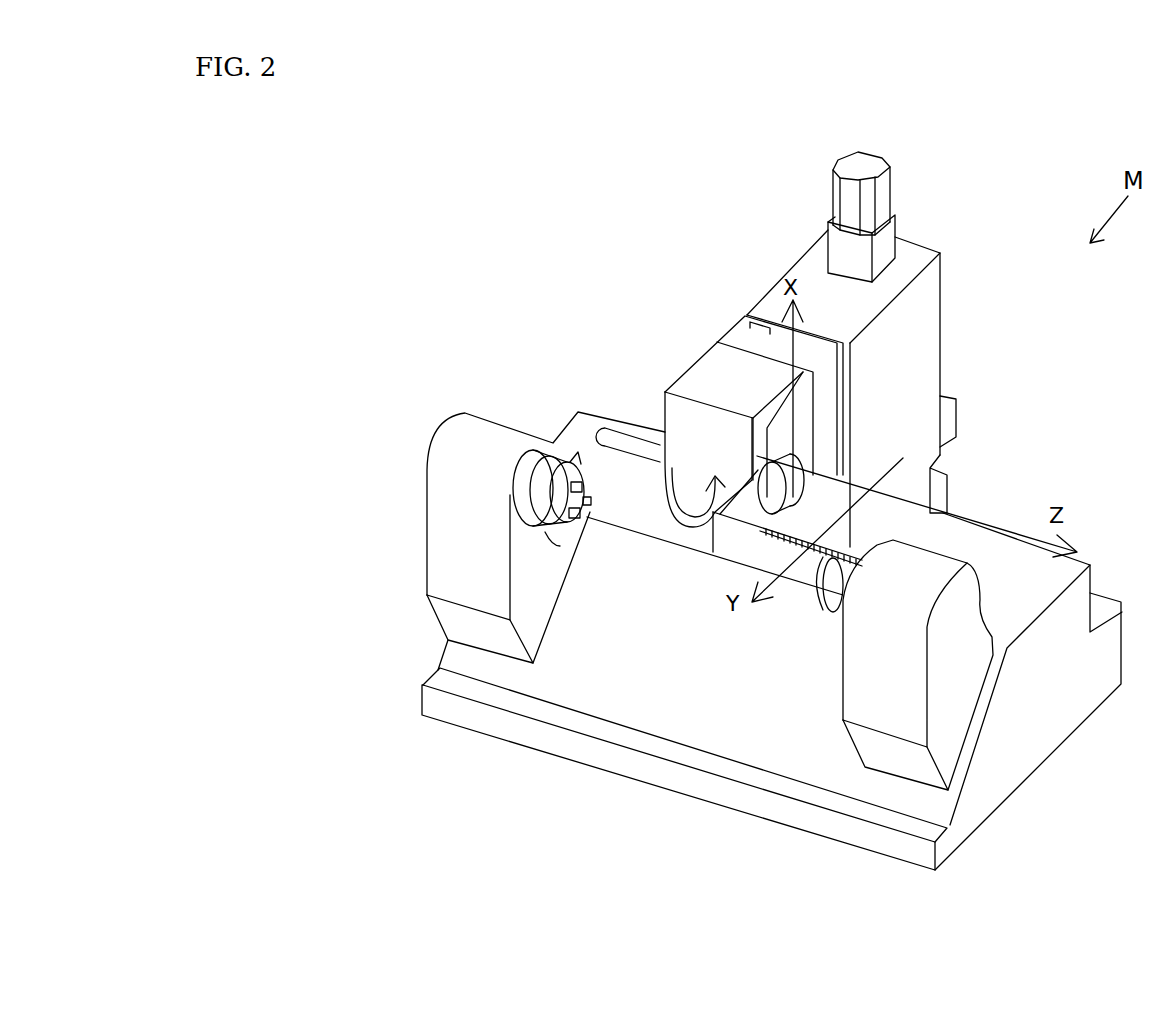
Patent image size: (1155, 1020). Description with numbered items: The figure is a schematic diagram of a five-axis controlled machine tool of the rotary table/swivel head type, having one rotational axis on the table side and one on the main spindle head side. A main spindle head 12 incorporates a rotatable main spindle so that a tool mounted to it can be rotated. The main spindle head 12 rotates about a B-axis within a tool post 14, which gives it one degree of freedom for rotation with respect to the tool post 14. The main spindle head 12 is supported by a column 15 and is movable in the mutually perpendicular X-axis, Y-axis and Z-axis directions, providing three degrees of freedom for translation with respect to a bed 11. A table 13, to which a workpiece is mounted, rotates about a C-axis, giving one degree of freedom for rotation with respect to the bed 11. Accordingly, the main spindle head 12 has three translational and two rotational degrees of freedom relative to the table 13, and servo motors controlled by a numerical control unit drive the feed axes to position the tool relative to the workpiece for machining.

The bed 11 is at (693, 718).
The main spindle head 12 is at (652, 426).
The table 13 is at (541, 438).
The tool post 14 is at (708, 363).
The column 15 is at (916, 366).